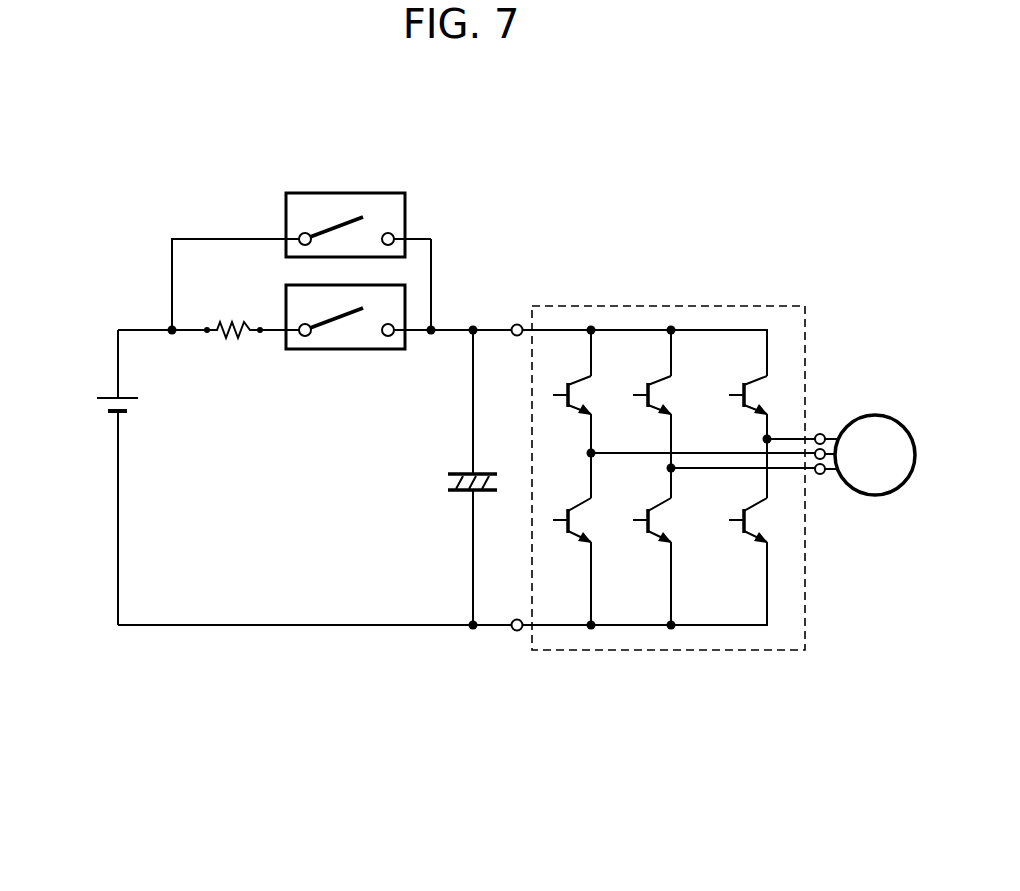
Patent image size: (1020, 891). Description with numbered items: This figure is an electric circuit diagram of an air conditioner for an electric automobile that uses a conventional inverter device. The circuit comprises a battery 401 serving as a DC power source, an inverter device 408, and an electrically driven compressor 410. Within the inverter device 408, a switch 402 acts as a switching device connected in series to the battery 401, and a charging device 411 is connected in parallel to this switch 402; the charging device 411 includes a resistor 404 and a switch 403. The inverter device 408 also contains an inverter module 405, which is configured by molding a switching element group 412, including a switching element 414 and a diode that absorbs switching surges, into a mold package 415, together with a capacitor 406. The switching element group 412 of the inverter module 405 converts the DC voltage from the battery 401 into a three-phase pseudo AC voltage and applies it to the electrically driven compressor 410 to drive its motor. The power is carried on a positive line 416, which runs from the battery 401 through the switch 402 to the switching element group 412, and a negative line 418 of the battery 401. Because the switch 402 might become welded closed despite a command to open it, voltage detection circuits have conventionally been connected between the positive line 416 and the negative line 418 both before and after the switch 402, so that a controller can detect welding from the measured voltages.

The battery 401 is at (101, 410).
The switch 402 is at (346, 193).
The switch 403 is at (406, 305).
The resistor 404 is at (227, 317).
The inverter module 405 is at (652, 467).
The capacitor 406 is at (458, 493).
The inverter device 408 is at (590, 280).
The electrically driven compressor 410 is at (884, 493).
The charging device 411 is at (268, 352).
The switching element group 412 is at (645, 313).
The switching element 414 is at (663, 524).
The mold package 415 is at (570, 650).
The positive line 416 is at (119, 328).
The negative line 418 is at (215, 625).